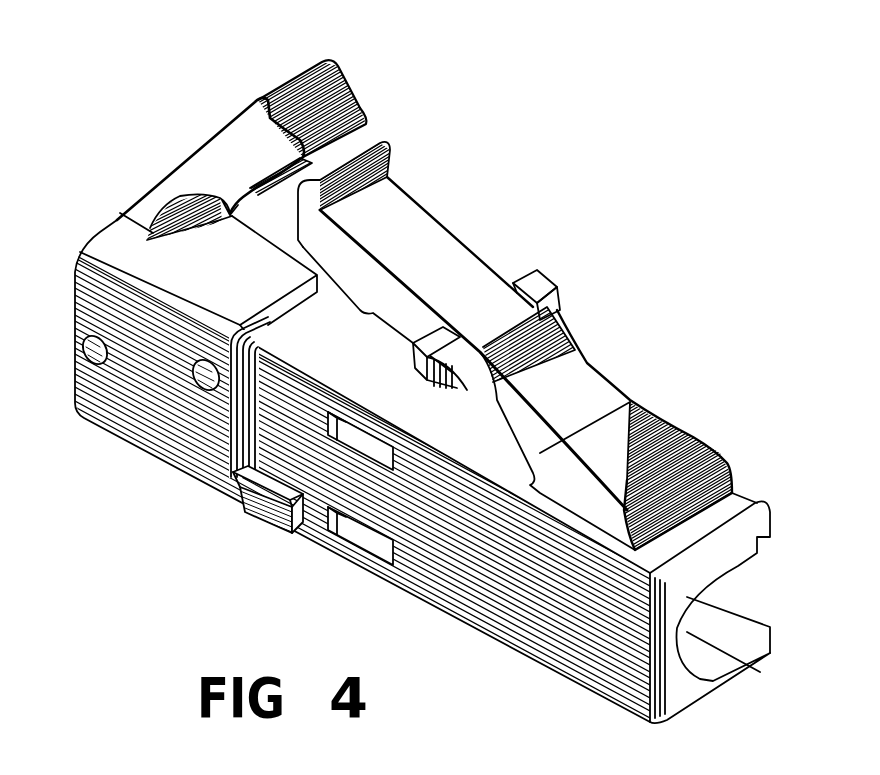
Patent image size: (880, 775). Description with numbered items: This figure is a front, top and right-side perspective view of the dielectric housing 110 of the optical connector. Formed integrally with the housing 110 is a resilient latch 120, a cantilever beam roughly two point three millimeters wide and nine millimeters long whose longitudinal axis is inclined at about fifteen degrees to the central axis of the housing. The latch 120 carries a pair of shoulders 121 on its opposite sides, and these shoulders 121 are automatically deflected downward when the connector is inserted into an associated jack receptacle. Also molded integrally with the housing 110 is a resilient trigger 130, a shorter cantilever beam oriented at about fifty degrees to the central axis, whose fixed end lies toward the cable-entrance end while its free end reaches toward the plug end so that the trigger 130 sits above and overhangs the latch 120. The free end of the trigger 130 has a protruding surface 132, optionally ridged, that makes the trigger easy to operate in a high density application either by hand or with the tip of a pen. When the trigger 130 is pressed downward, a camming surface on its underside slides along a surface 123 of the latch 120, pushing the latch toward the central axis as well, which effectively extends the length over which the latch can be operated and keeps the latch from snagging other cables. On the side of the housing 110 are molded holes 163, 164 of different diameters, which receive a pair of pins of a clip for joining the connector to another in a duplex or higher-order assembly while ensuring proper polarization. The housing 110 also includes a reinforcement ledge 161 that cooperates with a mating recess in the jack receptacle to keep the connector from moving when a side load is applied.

The housing 110 is at (400, 476).
The latch 120 is at (515, 326).
The shoulders 121 is at (538, 272).
The surface of the latch 123 is at (375, 148).
The trigger 130 is at (252, 117).
The protruding surface 132 is at (308, 65).
The reinforcement ledge 161 is at (262, 497).
The hole 163 is at (205, 390).
The hole 164 is at (86, 355).